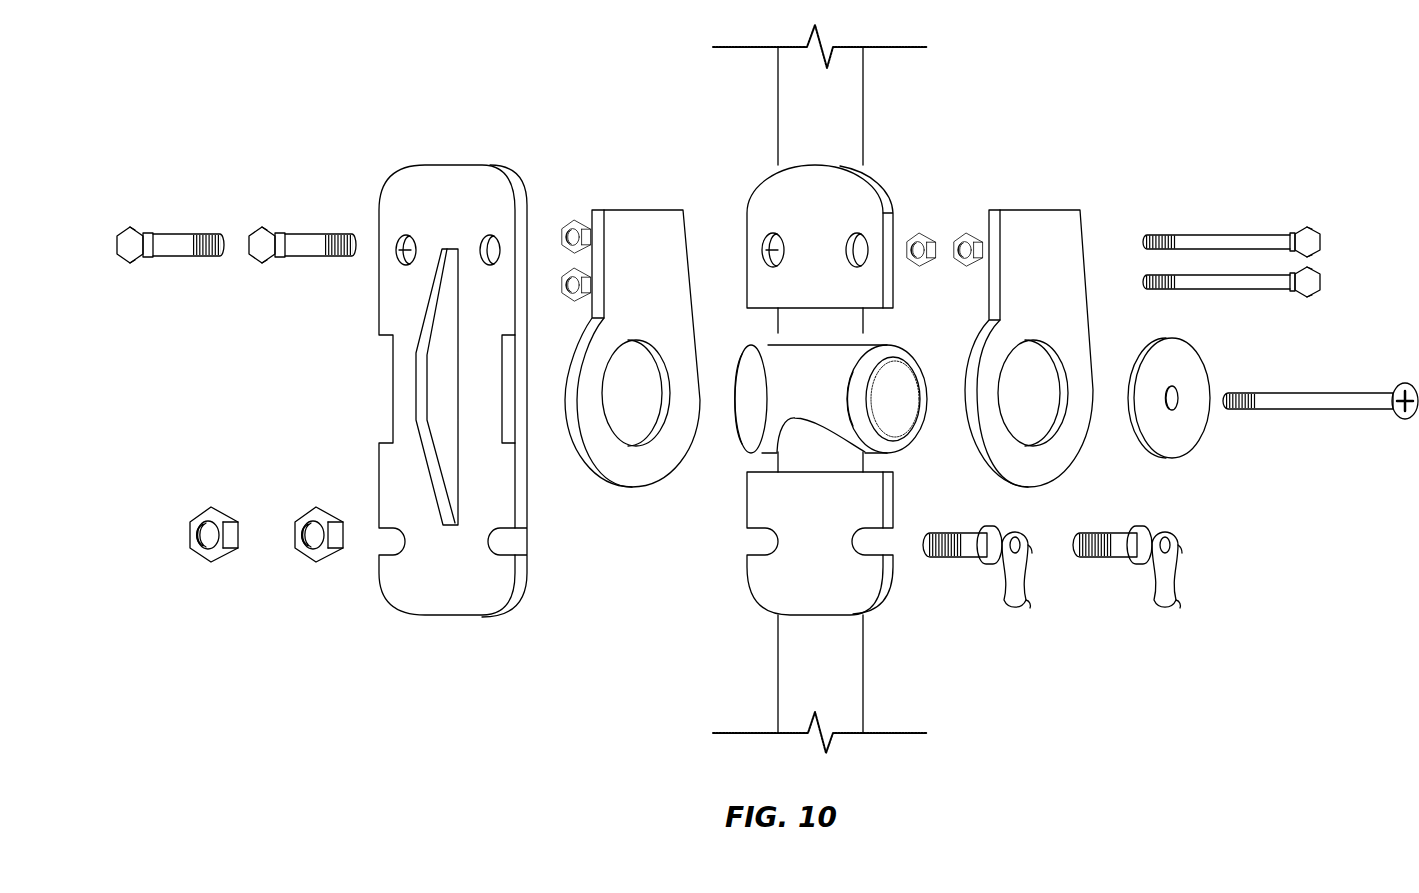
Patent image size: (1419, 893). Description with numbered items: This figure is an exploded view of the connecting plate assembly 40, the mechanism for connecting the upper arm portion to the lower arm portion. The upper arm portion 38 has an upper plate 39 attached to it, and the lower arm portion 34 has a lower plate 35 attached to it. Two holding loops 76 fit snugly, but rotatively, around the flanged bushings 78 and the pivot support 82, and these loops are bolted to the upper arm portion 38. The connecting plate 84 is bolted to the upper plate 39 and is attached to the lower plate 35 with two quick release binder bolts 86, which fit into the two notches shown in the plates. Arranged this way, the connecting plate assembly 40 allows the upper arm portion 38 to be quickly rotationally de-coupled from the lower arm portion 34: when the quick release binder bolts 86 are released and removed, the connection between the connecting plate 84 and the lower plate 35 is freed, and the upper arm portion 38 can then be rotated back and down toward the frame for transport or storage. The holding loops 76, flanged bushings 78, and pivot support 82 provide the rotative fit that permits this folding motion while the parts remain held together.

The lower arm portion 34 is at (776, 652).
The lower plate 35 is at (885, 597).
The upper arm portion 38 is at (865, 85).
The upper plate 39 is at (888, 188).
The connecting plate assembly 40 is at (650, 98).
The holding loop 76 is at (643, 210).
The flanged bushing 78 is at (908, 357).
The pivot support 82 is at (773, 405).
The connecting plate 84 is at (447, 163).
The quick release binder bolt 86 is at (968, 532).